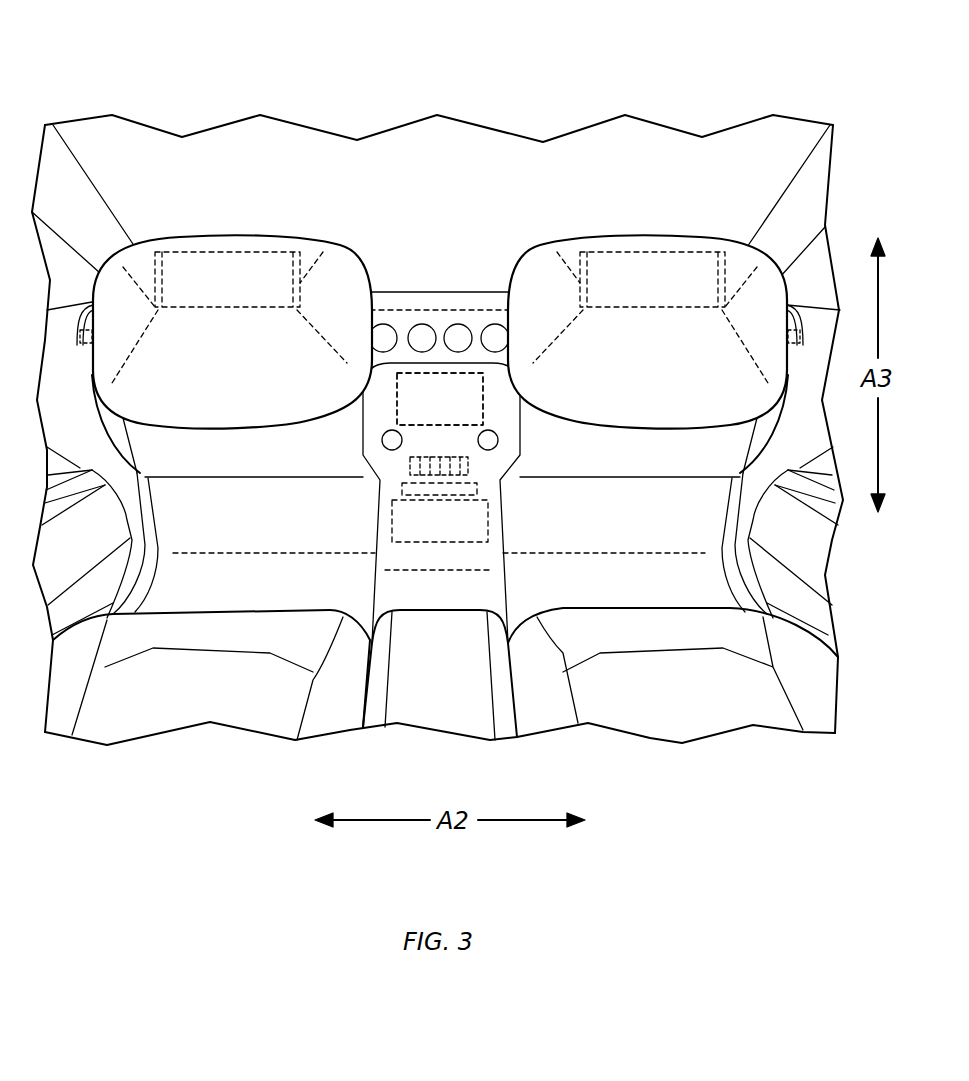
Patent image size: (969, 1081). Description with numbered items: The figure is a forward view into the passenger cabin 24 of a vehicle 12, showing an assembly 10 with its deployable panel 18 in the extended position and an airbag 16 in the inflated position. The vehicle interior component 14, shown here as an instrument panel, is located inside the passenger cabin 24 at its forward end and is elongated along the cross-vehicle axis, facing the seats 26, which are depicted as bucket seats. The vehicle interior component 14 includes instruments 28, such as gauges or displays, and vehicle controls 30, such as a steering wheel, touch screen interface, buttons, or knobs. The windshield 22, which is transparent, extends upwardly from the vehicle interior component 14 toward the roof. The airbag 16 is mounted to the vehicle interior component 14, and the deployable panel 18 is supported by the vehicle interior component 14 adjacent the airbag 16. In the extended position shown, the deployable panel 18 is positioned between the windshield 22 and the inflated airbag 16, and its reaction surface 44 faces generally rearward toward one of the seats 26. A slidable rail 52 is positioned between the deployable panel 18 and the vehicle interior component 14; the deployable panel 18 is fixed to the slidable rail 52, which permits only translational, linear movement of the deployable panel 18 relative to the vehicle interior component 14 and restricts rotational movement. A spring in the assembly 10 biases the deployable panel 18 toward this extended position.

The assembly 10 is at (312, 180).
The vehicle 12 is at (270, 65).
The vehicle interior component 14 is at (457, 295).
The airbag 16 is at (227, 432).
The deployable panel 18 is at (225, 250).
The windshield 22 is at (450, 152).
The passenger cabin 24 is at (722, 160).
The seats 26 is at (167, 717).
The instruments 28 is at (420, 325).
The vehicle controls 30 is at (485, 408).
The reaction surface 44 is at (258, 267).
The slidable rail 52 is at (158, 243).